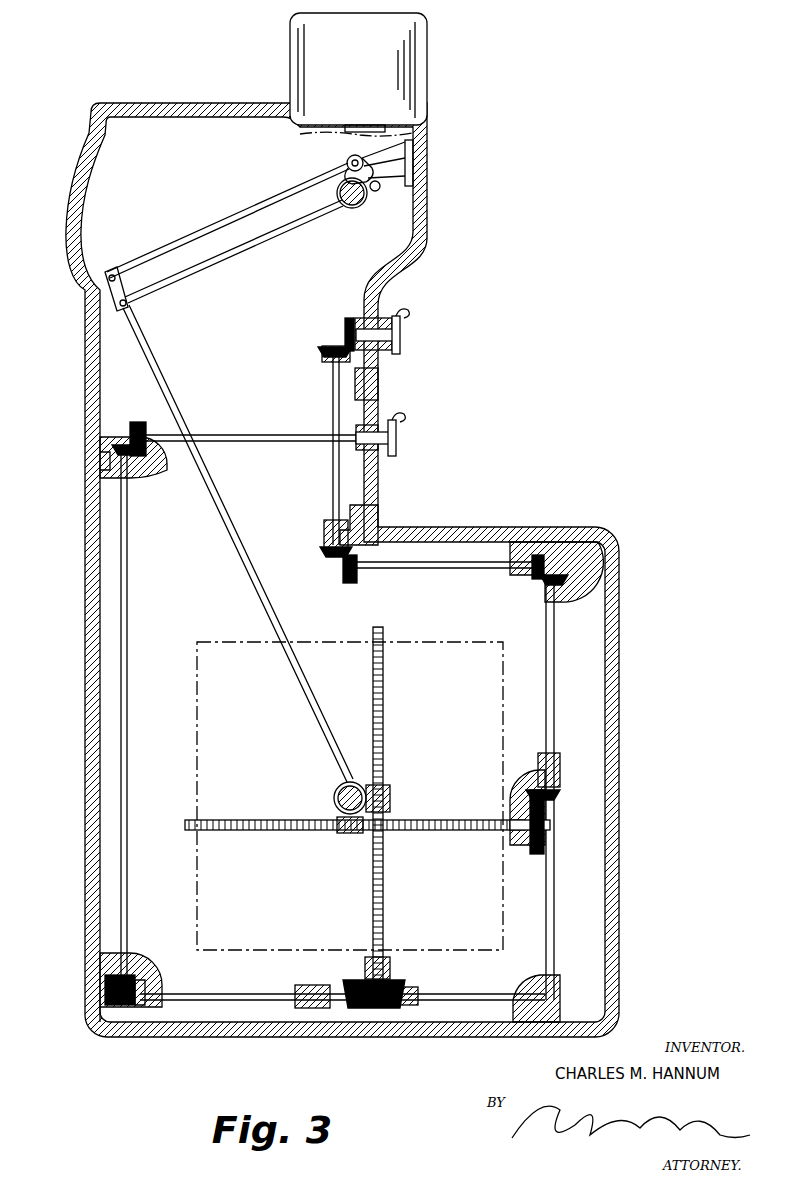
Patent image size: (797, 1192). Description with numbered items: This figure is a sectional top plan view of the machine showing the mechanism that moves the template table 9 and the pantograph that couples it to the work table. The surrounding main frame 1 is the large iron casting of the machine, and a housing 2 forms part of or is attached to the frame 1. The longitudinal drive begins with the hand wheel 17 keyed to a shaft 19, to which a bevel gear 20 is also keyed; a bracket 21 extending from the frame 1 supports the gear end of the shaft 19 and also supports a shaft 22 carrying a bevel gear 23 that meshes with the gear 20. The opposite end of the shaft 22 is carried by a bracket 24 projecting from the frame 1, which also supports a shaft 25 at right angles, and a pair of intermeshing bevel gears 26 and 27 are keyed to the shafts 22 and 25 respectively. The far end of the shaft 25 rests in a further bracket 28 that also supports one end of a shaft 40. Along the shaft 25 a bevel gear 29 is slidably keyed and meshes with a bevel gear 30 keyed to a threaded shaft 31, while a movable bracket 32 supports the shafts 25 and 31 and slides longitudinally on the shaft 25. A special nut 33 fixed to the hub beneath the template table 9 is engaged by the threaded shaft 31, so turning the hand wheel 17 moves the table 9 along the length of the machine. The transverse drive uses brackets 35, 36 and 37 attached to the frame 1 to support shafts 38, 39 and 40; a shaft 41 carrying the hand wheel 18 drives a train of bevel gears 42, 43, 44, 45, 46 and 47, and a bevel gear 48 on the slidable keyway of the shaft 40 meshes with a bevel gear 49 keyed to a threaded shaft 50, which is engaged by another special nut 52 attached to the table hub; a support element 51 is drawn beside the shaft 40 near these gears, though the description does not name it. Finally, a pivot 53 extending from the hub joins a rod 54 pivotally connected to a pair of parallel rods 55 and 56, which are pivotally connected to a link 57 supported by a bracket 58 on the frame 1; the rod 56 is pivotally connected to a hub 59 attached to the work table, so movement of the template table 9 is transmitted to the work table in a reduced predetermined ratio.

The main frame 1 is at (70, 162).
The housing 2 is at (290, 68).
The template table 9 is at (505, 903).
The hand wheel 17 is at (400, 446).
The hand wheel 18 is at (402, 338).
The shaft 19 is at (250, 435).
The bevel gear 20 is at (130, 430).
The bracket 21 is at (150, 470).
The shaft 22 is at (121, 570).
The bevel gear 23 is at (113, 447).
The bracket 24 is at (128, 958).
The shaft 25 is at (200, 1001).
The bevel gear 26 is at (106, 990).
The bevel gear 27 is at (128, 1007).
The bracket 28 is at (525, 1016).
The bevel gear 29 is at (352, 1010).
The bevel gear 30 is at (412, 1006).
The threaded shaft 31 is at (385, 910).
The movable bracket 32 is at (310, 1009).
The special nut 33 is at (391, 792).
The bracket 35 is at (378, 378).
The bracket 36 is at (376, 523).
The bracket 37 is at (530, 541).
The shaft 38 is at (333, 388).
The shaft 39 is at (470, 561).
The shaft 40 is at (556, 675).
The shaft 41 is at (382, 318).
The bevel gear 42 is at (348, 320).
The bevel gear 43 is at (330, 346).
The bevel gear 44 is at (324, 546).
The bevel gear 45 is at (350, 583).
The bevel gear 46 is at (546, 555).
The bevel gear 47 is at (566, 576).
The bevel gear 48 is at (562, 800).
The bevel gear 49 is at (548, 840).
The threaded shaft 50 is at (455, 820).
The bearing block 51 is at (560, 765).
The special nut 52 is at (340, 834).
The pivot 53 is at (334, 797).
The rod 54 is at (259, 602).
The parallel rod 55 is at (190, 238).
The parallel rod 56 is at (237, 248).
The link 57 is at (348, 163).
The bracket 58 is at (414, 145).
The hub 59 is at (366, 198).